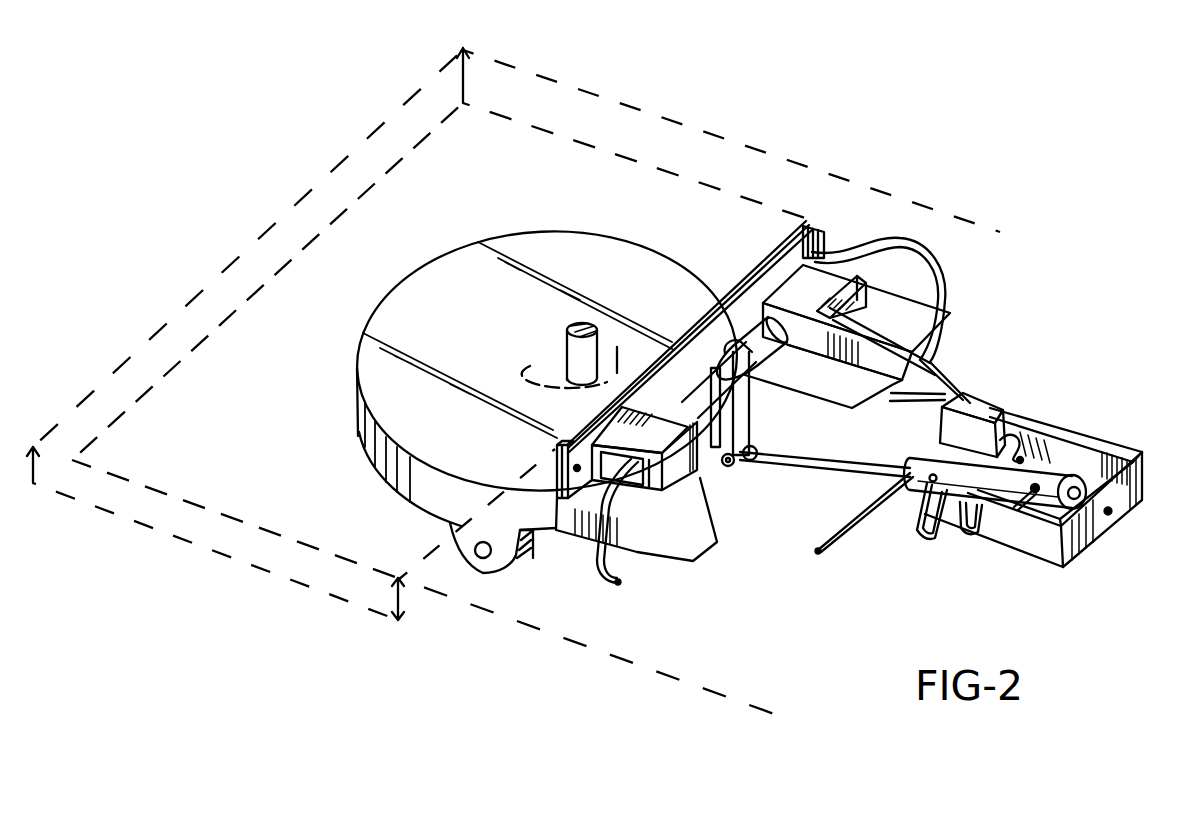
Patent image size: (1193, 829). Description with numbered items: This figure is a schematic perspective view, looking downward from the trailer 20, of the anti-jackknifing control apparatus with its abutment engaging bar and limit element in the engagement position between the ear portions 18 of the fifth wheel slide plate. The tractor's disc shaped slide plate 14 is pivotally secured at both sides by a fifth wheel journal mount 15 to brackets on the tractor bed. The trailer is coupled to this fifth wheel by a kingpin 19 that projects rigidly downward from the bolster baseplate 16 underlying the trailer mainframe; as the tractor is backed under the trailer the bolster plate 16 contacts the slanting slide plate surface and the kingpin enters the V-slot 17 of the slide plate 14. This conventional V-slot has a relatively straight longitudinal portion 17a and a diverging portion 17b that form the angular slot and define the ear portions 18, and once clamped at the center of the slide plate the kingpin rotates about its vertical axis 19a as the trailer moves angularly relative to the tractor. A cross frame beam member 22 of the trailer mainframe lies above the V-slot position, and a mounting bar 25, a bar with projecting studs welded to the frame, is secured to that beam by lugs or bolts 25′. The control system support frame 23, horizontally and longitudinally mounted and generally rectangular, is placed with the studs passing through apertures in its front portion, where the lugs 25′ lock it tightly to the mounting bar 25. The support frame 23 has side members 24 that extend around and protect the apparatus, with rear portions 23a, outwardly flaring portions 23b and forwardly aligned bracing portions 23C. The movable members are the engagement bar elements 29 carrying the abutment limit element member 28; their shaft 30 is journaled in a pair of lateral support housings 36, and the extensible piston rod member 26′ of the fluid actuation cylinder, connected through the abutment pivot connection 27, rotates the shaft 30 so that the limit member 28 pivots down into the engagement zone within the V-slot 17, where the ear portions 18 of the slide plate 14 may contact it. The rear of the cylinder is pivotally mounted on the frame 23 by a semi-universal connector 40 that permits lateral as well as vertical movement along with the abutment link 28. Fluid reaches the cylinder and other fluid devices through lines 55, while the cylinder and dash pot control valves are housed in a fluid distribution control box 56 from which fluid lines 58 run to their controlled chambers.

The fifth wheel slide plate 14 is at (403, 282).
The fifth wheel journal mount 15 is at (478, 577).
The bolster baseplate 16 is at (452, 525).
The V-slot 17 is at (700, 497).
The straight longitudinal portion 17a is at (618, 373).
The diverging portion 17b is at (817, 440).
The ear portions 18 is at (700, 537).
The kingpin 19 is at (550, 383).
The vertical axis 19a is at (566, 327).
The trailer 20 is at (1008, 240).
The cross frame beam member 22 is at (405, 622).
The control system support frame 23 is at (1076, 433).
The rear portions 23a is at (990, 463).
The outwardly flaring portions 23b is at (947, 393).
The forwardly aligned bracing portions 23C is at (833, 392).
The side members 24 is at (1114, 512).
The mounting bar 25 is at (782, 262).
The lugs 25′ is at (830, 247).
The extensible piston rod member 26′ is at (824, 463).
The abutment pivot connection 27 is at (724, 460).
The abutment limit element member 28 is at (752, 458).
The engagement bar elements 29 is at (722, 365).
The shaft 30 is at (620, 330).
The lateral support housings 36 is at (962, 490).
The vertically pivotal connector 40 is at (1090, 488).
The fluid lines 55 is at (1020, 435).
The fluid distribution control box 56 is at (957, 407).
The fluid lines 58 is at (590, 587).